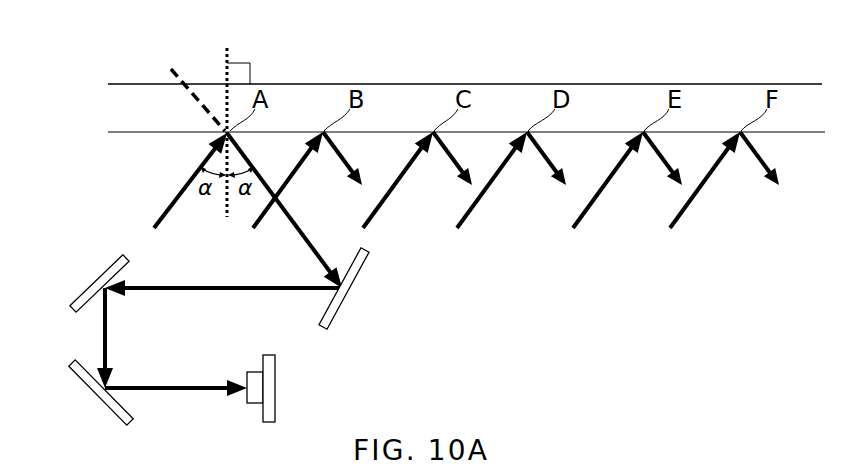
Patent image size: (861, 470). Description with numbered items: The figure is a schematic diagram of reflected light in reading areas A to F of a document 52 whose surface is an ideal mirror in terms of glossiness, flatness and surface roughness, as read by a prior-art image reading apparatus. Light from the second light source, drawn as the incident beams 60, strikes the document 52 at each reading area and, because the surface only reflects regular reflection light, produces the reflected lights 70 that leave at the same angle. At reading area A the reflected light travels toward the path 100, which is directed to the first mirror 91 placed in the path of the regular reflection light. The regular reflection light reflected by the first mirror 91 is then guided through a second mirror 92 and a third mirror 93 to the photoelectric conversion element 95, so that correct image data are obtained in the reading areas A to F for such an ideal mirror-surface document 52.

The path 100 is at (170, 68).
The document 52 is at (437, 84).
The light beam 60 is at (182, 212).
The reflected light 70 is at (345, 171).
The first mirror 91 is at (356, 281).
The second mirror 92 is at (97, 283).
The third mirror 93 is at (98, 393).
The photoelectric conversion element 95 is at (278, 386).